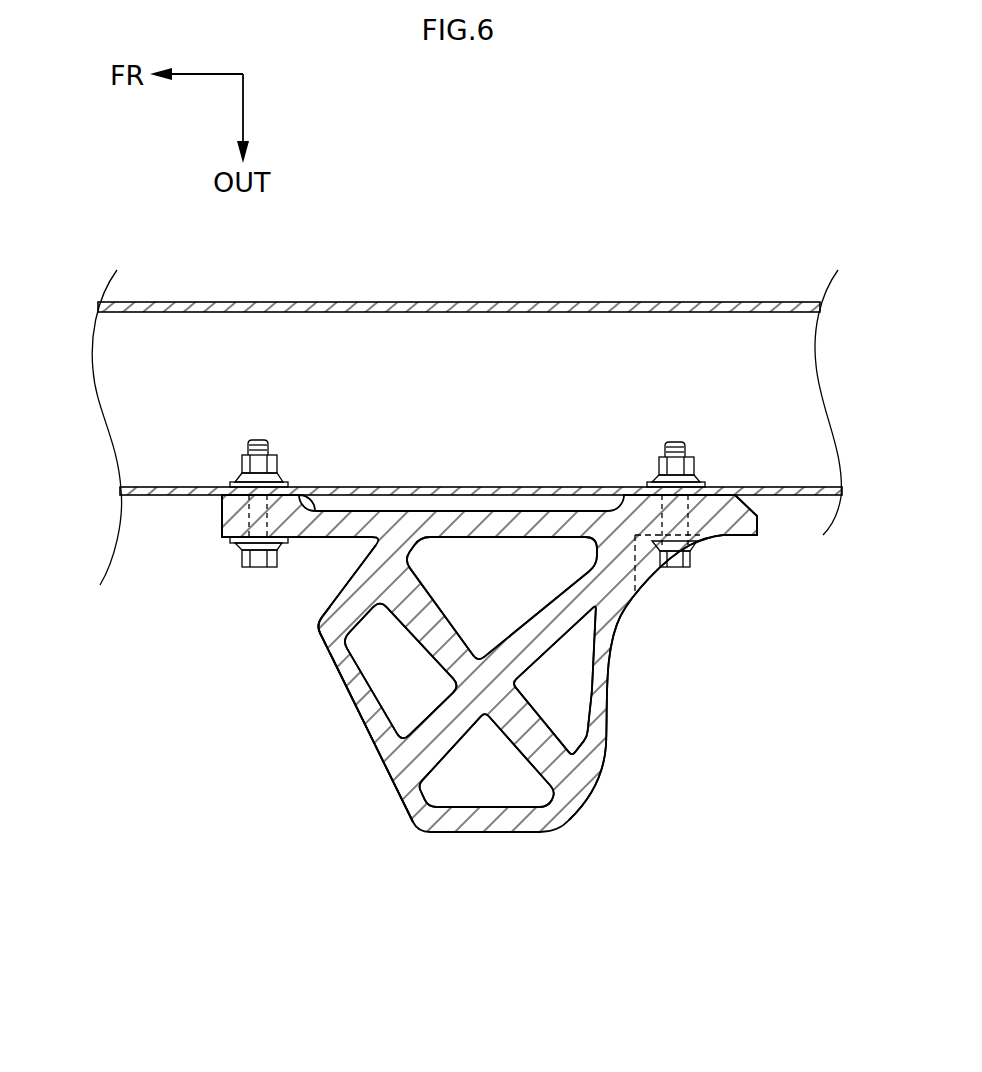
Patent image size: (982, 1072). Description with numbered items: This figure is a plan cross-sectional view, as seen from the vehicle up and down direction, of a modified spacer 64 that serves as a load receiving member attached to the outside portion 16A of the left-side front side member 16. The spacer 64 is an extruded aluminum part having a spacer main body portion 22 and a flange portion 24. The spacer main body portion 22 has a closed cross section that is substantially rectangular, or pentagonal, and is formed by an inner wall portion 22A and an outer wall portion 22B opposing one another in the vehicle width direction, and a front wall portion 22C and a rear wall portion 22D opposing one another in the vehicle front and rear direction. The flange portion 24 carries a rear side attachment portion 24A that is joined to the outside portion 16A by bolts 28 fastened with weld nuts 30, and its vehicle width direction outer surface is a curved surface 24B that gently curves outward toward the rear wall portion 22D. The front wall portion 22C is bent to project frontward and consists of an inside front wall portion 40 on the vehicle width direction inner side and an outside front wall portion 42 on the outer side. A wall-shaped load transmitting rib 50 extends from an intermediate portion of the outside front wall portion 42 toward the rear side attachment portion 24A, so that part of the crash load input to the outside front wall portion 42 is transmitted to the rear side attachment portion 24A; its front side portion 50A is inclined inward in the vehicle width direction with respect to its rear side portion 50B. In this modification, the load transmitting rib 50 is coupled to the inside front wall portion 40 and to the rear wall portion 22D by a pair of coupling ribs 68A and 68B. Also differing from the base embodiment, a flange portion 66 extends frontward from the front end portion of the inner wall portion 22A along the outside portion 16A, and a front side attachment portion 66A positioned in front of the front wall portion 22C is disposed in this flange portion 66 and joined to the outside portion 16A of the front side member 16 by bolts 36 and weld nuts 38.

The front side member 16 is at (789, 296).
The outside portion 16A is at (800, 497).
The spacer main body portion 22 is at (608, 765).
The inner wall portion 22A is at (480, 511).
The outer wall portion 22B is at (500, 833).
The front wall portion 22C is at (238, 667).
The rear wall portion 22D is at (608, 697).
The flange portion 24 is at (741, 548).
The rear side attachment portion 24A is at (710, 513).
The curved surface 24B is at (645, 590).
The bolt 28 is at (692, 567).
The weld nut 30 is at (657, 460).
The bolt 36 is at (237, 567).
The weld nut 38 is at (240, 460).
The inside front wall portion 40 is at (317, 622).
The outside front wall portion 42 is at (347, 702).
The load transmitting rib 50 is at (533, 602).
The front side portion 50A is at (458, 737).
The rear side portion 50B is at (549, 648).
The spacer 64 is at (693, 740).
The flange portion 66 is at (313, 538).
The front side attachment portion 66A is at (237, 520).
The coupling rib 68A is at (438, 608).
The coupling rib 68B is at (540, 800).